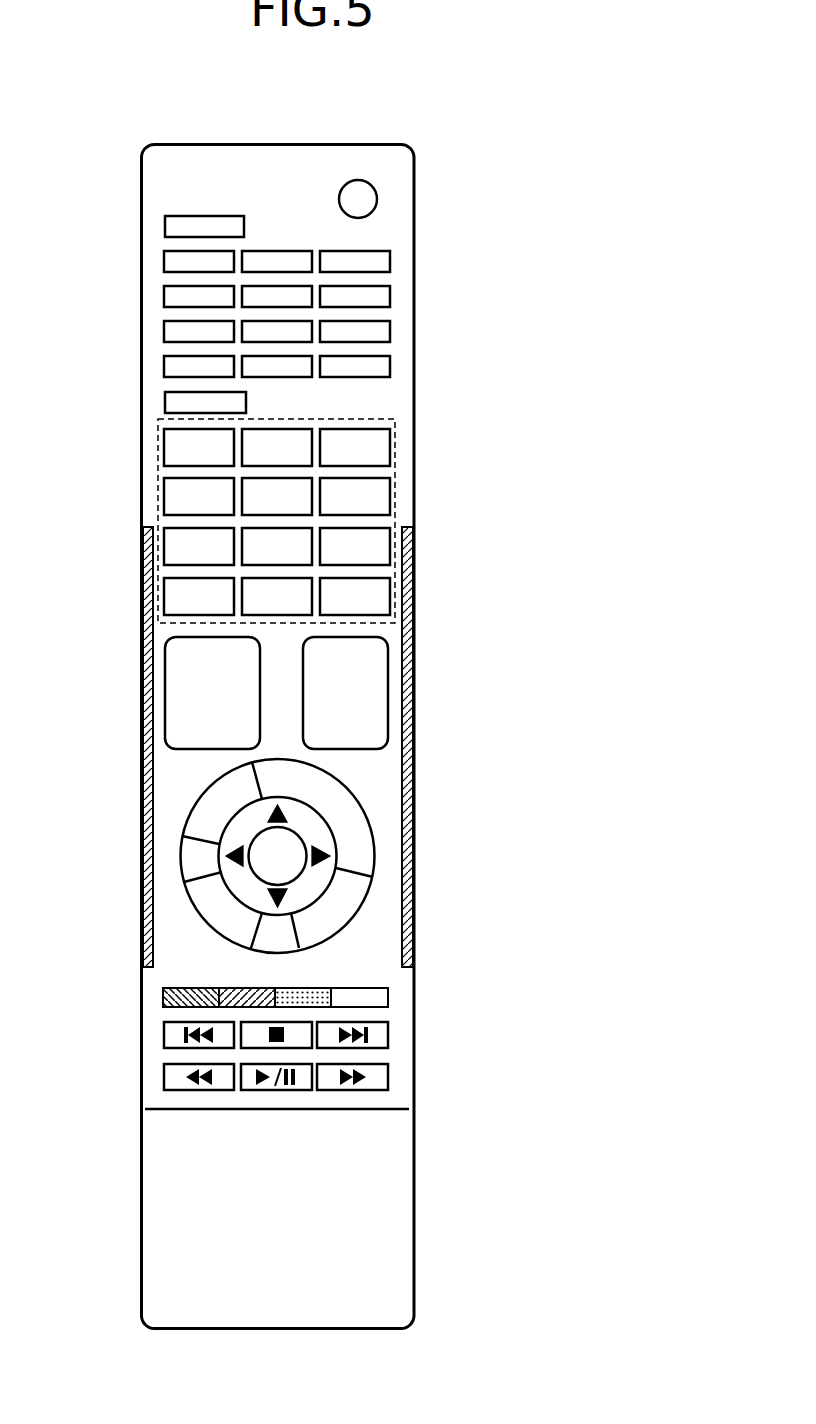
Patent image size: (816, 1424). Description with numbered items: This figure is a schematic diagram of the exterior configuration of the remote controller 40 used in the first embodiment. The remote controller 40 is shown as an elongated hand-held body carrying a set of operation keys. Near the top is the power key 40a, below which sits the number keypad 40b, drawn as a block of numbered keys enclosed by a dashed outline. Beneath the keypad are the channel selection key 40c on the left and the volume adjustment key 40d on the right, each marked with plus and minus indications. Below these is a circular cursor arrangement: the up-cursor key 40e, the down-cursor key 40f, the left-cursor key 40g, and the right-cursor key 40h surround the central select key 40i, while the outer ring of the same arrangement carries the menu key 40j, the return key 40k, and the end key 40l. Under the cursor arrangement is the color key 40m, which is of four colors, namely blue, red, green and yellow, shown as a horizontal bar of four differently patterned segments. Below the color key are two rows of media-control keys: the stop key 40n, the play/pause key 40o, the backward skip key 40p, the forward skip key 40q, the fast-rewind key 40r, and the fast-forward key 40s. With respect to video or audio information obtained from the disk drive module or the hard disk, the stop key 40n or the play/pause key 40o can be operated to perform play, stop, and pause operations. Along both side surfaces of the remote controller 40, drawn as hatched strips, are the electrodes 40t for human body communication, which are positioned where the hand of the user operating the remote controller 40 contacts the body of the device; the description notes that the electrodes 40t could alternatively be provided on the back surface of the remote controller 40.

The remote controller 40 is at (284, 144).
The power key 40a is at (378, 198).
The number keypad 40b is at (396, 495).
The channel selection key 40c is at (167, 657).
The volume adjustment key 40d is at (388, 670).
The up-cursor key 40e is at (287, 813).
The down-cursor key 40f is at (288, 897).
The left-cursor key 40g is at (223, 860).
The right-cursor key 40h is at (333, 842).
The select key 40i is at (250, 840).
The menu key 40j is at (205, 783).
The return key 40k is at (210, 922).
The end key 40l is at (357, 902).
The color key 40m is at (388, 994).
The stop key 40n is at (300, 1048).
The play/pause key 40o is at (264, 1090).
The backward skip key 40p is at (164, 1035).
The forward skip key 40q is at (388, 1035).
The fast-rewind key 40r is at (164, 1077).
The fast-forward key 40s is at (388, 1077).
The electrodes 40t is at (147, 563).